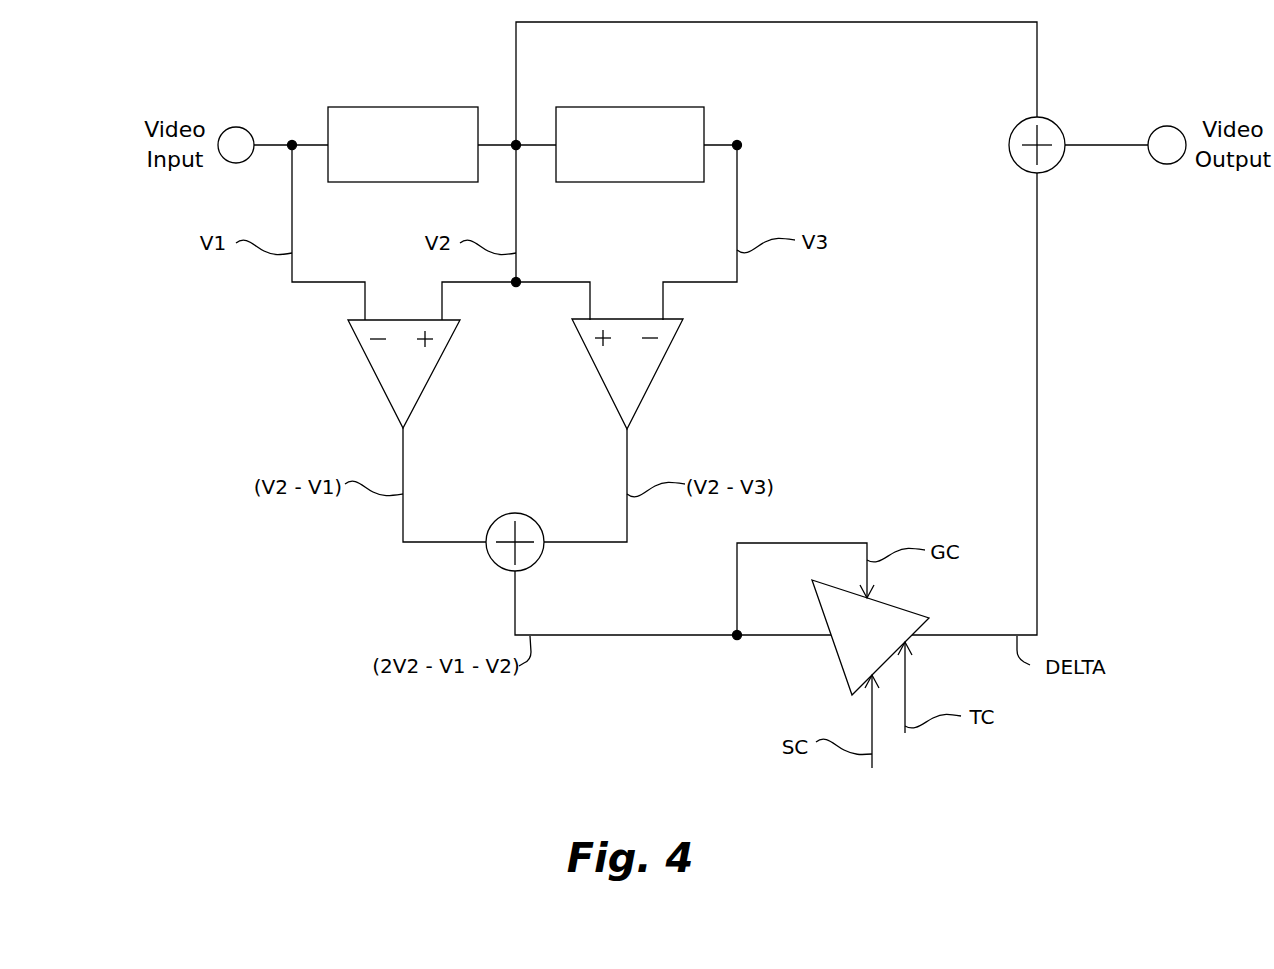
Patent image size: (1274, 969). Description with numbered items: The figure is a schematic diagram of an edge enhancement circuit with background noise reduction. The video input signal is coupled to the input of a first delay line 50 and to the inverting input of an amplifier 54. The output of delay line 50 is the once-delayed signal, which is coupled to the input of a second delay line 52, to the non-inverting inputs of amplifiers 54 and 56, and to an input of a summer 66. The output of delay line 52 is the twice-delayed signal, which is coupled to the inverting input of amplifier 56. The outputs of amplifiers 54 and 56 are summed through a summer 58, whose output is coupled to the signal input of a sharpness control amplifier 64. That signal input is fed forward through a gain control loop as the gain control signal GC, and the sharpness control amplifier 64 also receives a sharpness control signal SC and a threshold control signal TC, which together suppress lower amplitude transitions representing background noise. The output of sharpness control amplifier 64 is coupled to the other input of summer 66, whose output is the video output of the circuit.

The delay line 50 is at (403, 107).
The delay line 52 is at (630, 107).
The amplifier 54 is at (361, 343).
The amplifier 56 is at (667, 345).
The summer 58 is at (515, 513).
The sharpness control amplifier 64 is at (841, 672).
The summer 66 is at (1047, 119).